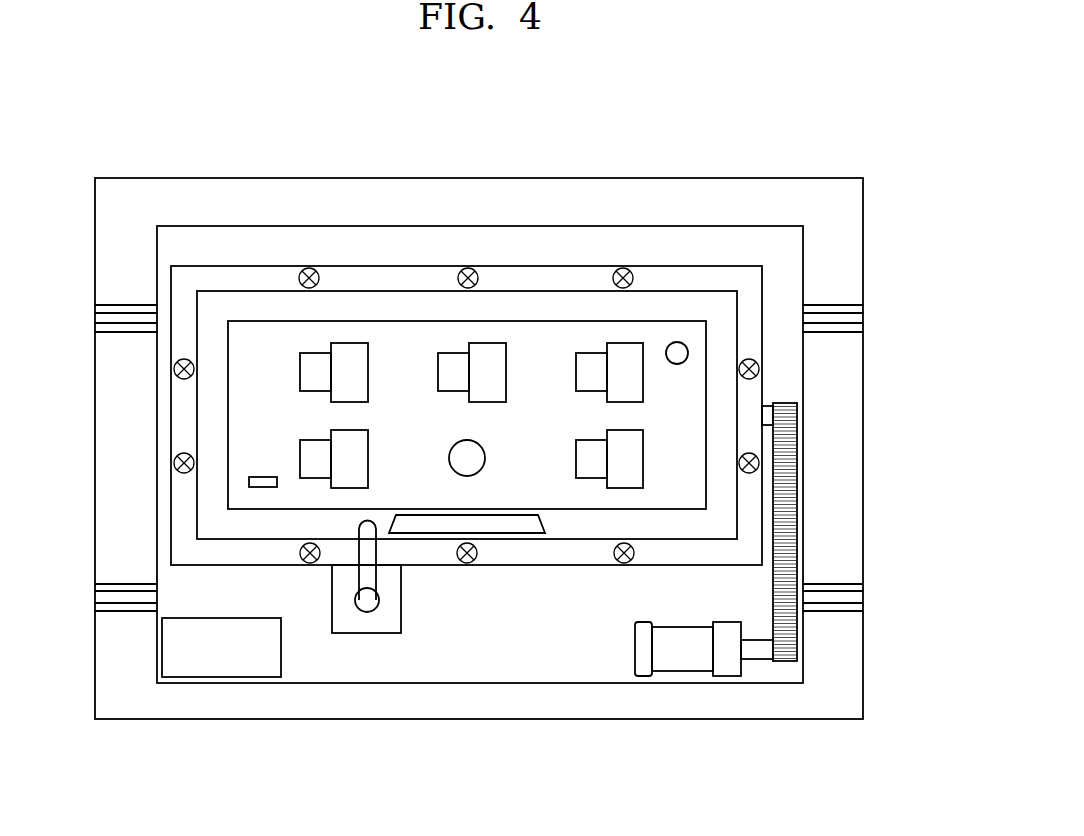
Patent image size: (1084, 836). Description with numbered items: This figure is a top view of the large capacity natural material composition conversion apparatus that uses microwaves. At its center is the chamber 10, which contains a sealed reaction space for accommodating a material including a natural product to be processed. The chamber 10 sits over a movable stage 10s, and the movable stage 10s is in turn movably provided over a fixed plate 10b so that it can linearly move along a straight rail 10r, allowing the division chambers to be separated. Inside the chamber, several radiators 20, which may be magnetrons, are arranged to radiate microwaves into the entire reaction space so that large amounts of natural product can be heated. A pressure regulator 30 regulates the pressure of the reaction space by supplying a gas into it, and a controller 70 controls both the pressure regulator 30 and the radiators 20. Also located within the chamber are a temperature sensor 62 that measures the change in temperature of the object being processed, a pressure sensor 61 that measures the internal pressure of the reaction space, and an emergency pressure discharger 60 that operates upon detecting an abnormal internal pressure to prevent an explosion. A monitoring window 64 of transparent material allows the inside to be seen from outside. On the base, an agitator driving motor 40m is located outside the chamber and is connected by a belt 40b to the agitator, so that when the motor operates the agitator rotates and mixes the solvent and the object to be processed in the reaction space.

The chamber 10 is at (430, 565).
The fixed plate 10b is at (847, 686).
The straight rail 10r is at (850, 598).
The movable stage 10s is at (765, 672).
The radiator 20 is at (490, 347).
The pressure regulator 30 is at (360, 625).
The agitator driving motor 40m is at (680, 660).
The belt 40b is at (792, 627).
The emergency pressure discharger 60 is at (680, 343).
The pressure sensor 61 is at (469, 472).
The temperature sensor 62 is at (250, 480).
The monitoring window 64 is at (525, 530).
The controller 70 is at (220, 660).